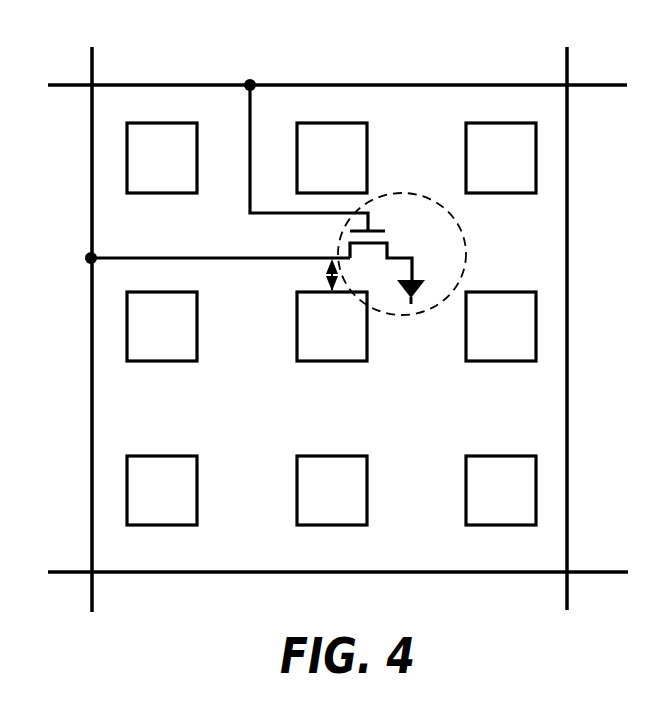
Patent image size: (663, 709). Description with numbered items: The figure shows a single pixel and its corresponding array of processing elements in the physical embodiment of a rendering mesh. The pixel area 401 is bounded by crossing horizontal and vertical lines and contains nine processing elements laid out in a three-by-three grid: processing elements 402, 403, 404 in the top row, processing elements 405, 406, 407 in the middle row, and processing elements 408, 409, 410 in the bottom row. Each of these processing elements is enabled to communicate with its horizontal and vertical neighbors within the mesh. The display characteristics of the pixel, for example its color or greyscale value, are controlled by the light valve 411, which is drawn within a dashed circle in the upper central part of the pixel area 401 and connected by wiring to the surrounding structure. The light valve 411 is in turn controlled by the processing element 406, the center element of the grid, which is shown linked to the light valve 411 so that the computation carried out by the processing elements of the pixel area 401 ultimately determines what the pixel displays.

The pixel area 401 is at (472, 572).
The processing element 402 is at (158, 193).
The processing element 403 is at (367, 143).
The processing element 404 is at (498, 193).
The processing element 405 is at (162, 361).
The processing element 406 is at (332, 361).
The processing element 407 is at (472, 362).
The processing element 408 is at (197, 475).
The processing element 409 is at (325, 456).
The processing element 410 is at (466, 495).
The light valve 411 is at (413, 195).